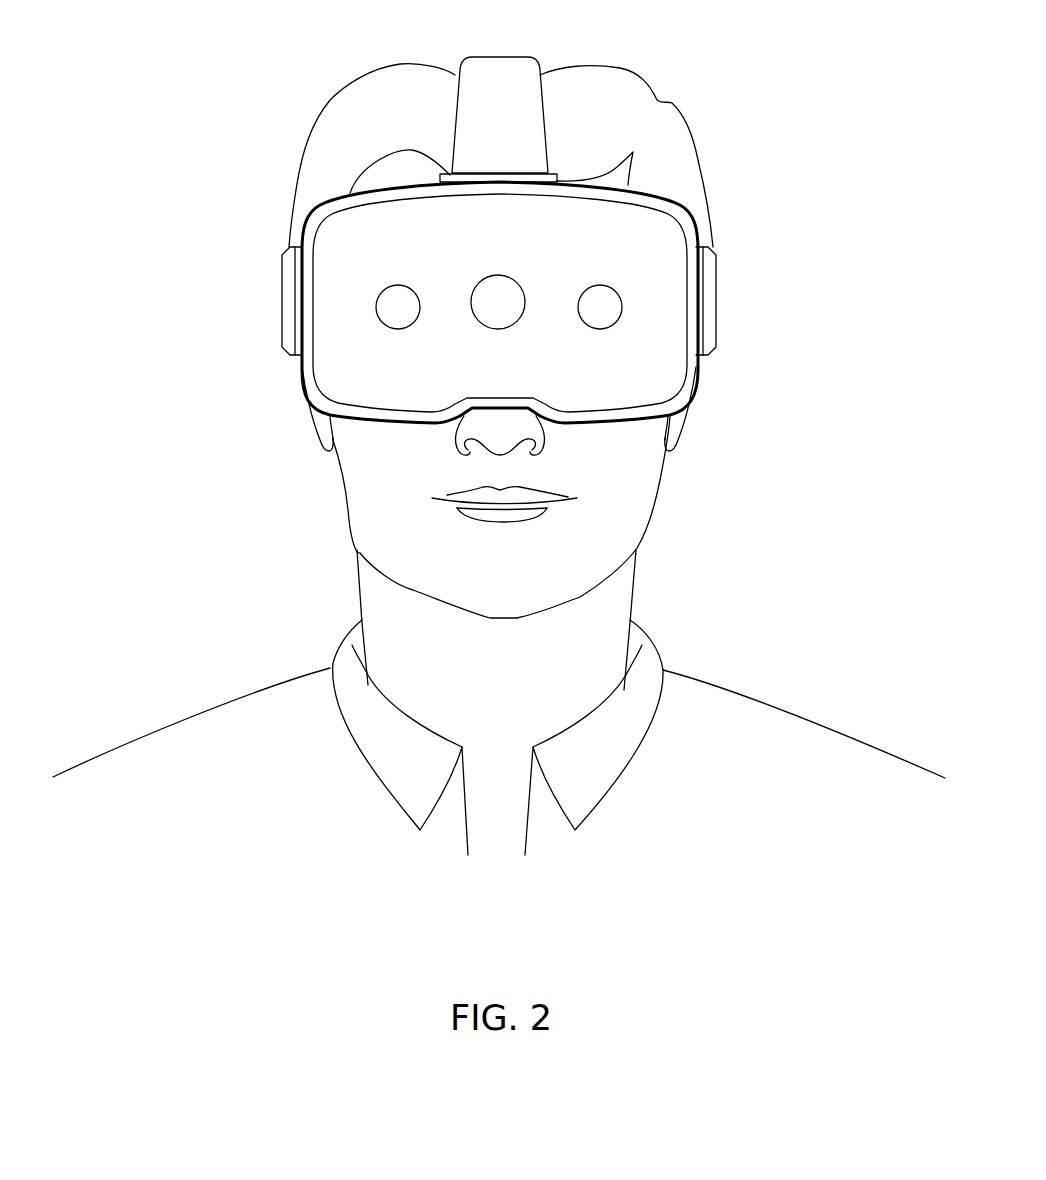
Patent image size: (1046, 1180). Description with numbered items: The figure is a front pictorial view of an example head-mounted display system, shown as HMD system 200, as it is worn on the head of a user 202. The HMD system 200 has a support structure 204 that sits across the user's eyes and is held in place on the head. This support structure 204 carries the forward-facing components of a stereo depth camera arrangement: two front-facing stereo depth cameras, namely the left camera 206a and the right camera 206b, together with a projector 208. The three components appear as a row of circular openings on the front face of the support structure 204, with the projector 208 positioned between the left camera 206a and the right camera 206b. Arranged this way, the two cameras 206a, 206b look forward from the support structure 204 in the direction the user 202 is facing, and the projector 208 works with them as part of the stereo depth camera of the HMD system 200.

The HMD system 200 is at (499, 441).
The user 202 is at (765, 703).
The support structure 204 is at (512, 274).
The left camera 206a is at (592, 285).
The right camera 206b is at (392, 285).
The projector 208 is at (490, 275).